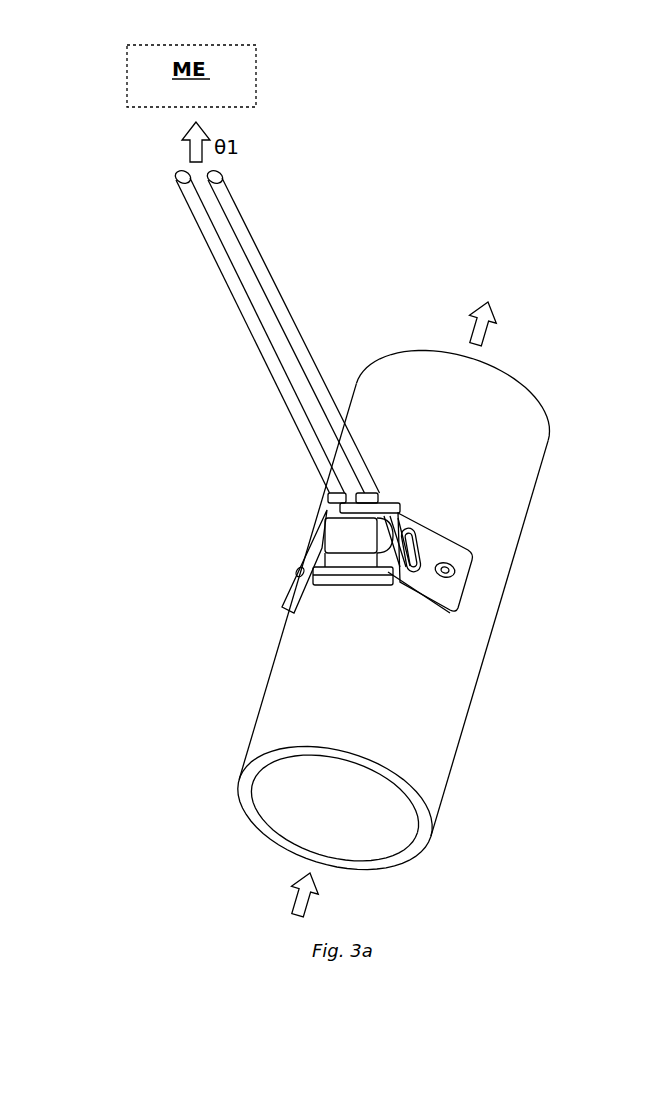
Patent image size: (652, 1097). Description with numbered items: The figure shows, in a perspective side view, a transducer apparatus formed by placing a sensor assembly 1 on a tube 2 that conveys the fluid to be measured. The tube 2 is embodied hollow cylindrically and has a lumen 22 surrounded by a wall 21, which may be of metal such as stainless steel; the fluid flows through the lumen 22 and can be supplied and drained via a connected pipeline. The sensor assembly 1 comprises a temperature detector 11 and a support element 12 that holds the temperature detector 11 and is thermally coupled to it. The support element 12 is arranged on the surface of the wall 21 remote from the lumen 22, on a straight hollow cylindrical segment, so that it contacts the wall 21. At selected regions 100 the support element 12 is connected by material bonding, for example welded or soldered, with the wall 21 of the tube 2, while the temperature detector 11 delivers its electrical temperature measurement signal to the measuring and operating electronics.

The sensor assembly 1 is at (358, 547).
The tube 2 is at (370, 700).
The temperature detector 11 is at (355, 564).
The support element 12 is at (462, 557).
The wall 21 is at (283, 685).
The lumen 22 is at (355, 847).
The selected regions 100 is at (298, 572).